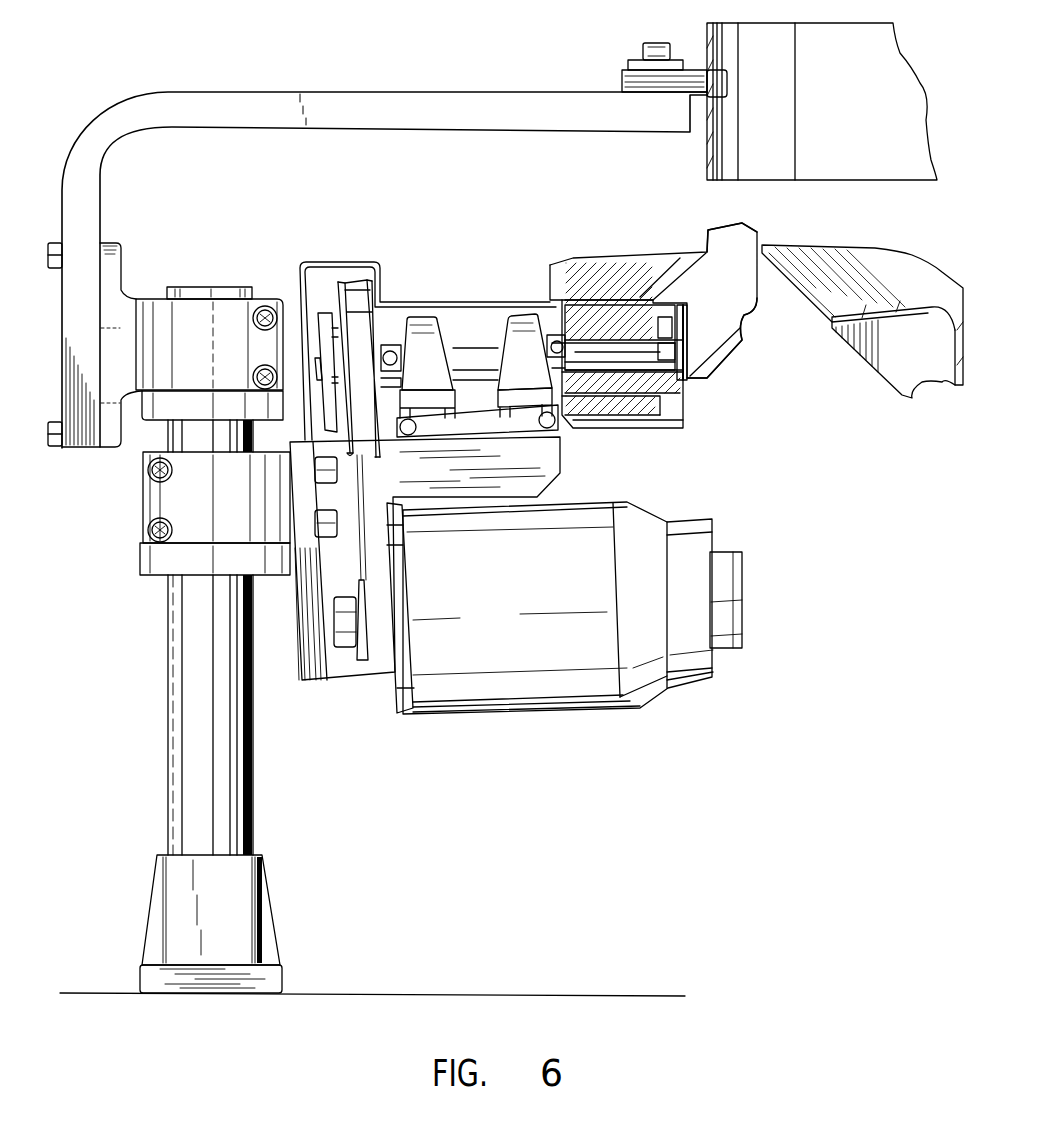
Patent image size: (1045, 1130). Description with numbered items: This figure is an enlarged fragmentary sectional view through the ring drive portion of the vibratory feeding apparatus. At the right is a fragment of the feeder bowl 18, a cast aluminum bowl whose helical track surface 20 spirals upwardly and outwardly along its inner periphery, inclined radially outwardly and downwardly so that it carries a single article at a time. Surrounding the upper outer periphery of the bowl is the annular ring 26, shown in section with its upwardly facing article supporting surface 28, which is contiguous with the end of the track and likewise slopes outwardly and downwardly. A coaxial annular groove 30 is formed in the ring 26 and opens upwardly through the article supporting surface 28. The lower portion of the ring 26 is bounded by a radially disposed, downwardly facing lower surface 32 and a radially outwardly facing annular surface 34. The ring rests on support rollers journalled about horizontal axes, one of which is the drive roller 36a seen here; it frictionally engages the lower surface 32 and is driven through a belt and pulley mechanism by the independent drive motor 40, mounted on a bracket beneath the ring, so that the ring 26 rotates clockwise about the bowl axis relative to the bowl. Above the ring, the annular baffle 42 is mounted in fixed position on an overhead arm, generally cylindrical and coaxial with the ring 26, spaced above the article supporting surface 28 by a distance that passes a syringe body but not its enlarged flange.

The feeder bowl 18 is at (878, 391).
The helical track surface 20 is at (884, 278).
The annular ring 26 is at (727, 321).
The article supporting surface 28 is at (717, 228).
The annular groove 30 is at (625, 258).
The lower surface 32 is at (546, 309).
The annular surface 34 is at (681, 383).
The drive roller 36a is at (647, 412).
The drive motor 40 is at (538, 694).
The annular baffle 42 is at (705, 50).